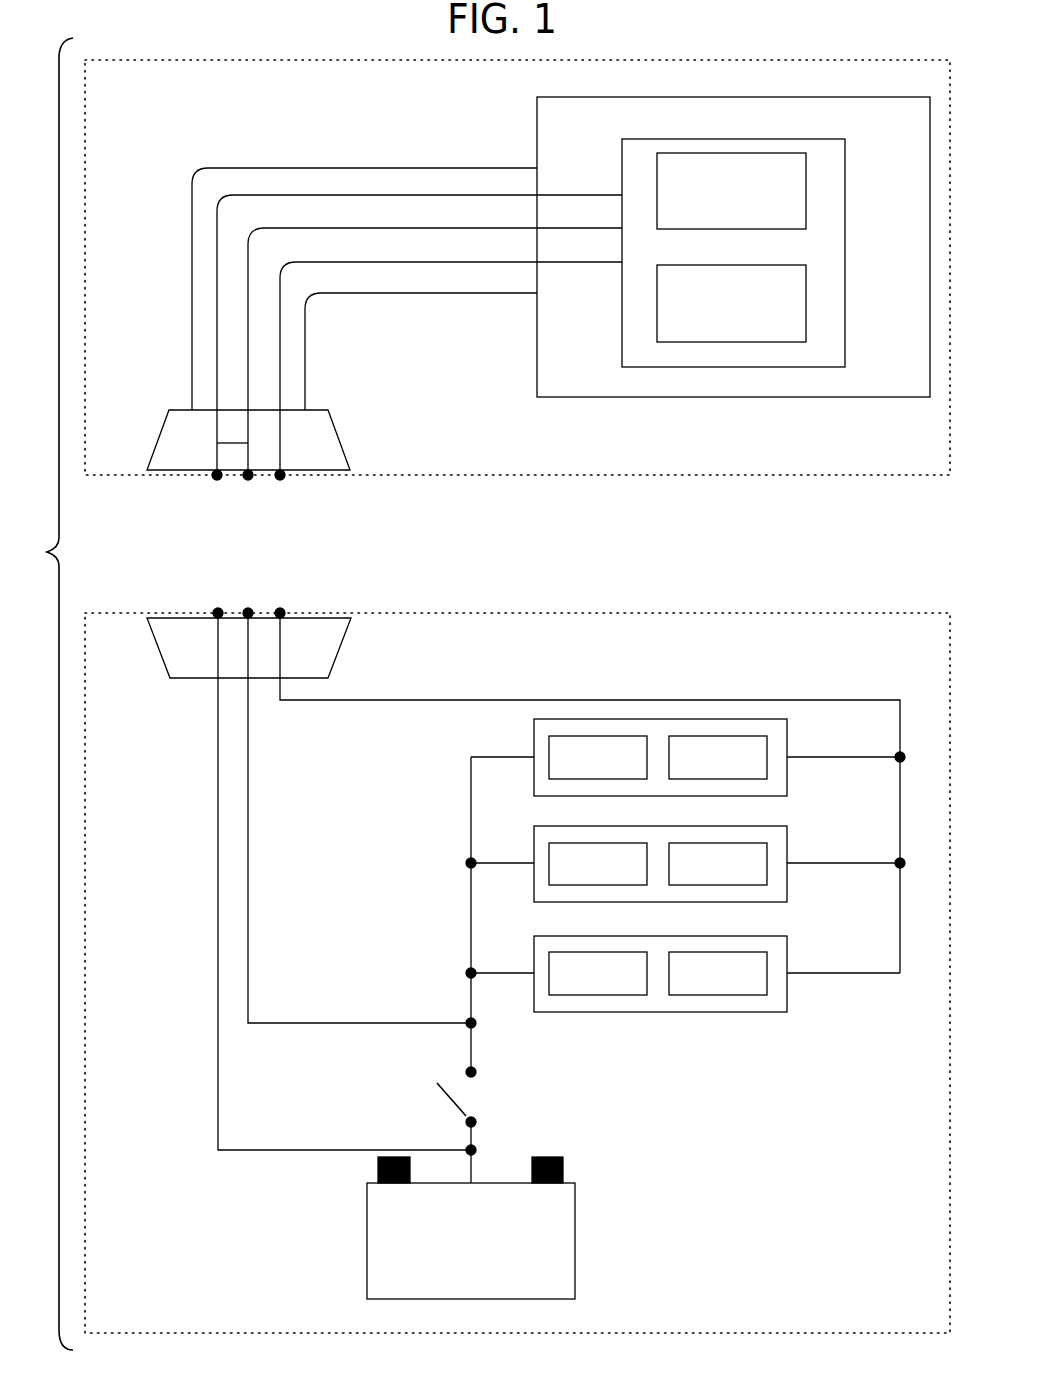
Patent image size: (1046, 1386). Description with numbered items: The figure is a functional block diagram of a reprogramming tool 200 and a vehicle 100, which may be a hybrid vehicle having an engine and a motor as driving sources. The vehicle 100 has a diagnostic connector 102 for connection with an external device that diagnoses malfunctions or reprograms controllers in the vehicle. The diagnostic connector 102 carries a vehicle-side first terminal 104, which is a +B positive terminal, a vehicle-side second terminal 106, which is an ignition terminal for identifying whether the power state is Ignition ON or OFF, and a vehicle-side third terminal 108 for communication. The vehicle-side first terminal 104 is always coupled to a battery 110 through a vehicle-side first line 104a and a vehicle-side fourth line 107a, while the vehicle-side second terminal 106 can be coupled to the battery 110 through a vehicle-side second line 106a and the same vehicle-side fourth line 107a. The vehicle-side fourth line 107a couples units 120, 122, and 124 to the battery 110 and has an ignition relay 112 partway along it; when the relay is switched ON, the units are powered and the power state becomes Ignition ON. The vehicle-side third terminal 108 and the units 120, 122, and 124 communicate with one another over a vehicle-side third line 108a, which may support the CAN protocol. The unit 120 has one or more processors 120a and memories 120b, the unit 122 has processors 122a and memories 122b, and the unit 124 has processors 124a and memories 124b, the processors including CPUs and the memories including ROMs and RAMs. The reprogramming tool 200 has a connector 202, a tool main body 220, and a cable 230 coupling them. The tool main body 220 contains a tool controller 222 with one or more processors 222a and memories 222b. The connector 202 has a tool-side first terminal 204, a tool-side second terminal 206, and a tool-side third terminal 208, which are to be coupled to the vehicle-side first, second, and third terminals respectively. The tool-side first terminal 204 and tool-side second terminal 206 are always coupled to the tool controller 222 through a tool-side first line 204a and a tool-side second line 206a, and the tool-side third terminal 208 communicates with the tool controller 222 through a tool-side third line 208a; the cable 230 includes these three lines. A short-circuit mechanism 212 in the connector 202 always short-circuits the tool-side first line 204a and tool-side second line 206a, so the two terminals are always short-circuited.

The reprogramming tool 200 is at (468, 97).
The tool main body 220 is at (757, 132).
The tool controller 222 is at (845, 254).
The processor 222a is at (702, 204).
The memory 222b is at (702, 317).
The tool-side first line 204a is at (300, 195).
The tool-side second line 206a is at (372, 228).
The tool-side third line 208a is at (403, 263).
The cable 230 is at (306, 366).
The connector 202 is at (341, 438).
The short-circuit mechanism 212 is at (233, 442).
The tool-side first terminal 204 is at (213, 480).
The tool-side second terminal 206 is at (247, 481).
The tool-side third terminal 208 is at (285, 480).
The vehicle 100 is at (468, 651).
The diagnostic connector 102 is at (340, 655).
The vehicle-side first terminal 104 is at (215, 608).
The vehicle-side second terminal 106 is at (248, 608).
The vehicle-side third terminal 108 is at (284, 608).
The vehicle-side first line 104a is at (218, 858).
The vehicle-side second line 106a is at (248, 866).
The vehicle-side third line 108a is at (535, 700).
The vehicle-side fourth line 107a is at (471, 830).
The ignition relay 112 is at (460, 1105).
The unit 120 is at (789, 740).
The processor 120a is at (628, 774).
The memory 120b is at (748, 774).
The unit 122 is at (789, 846).
The processor 122a is at (628, 881).
The memory 122b is at (748, 881).
The unit 124 is at (789, 956).
The processor 124a is at (628, 991).
The memory 124b is at (748, 991).
The battery 110 is at (496, 1255).